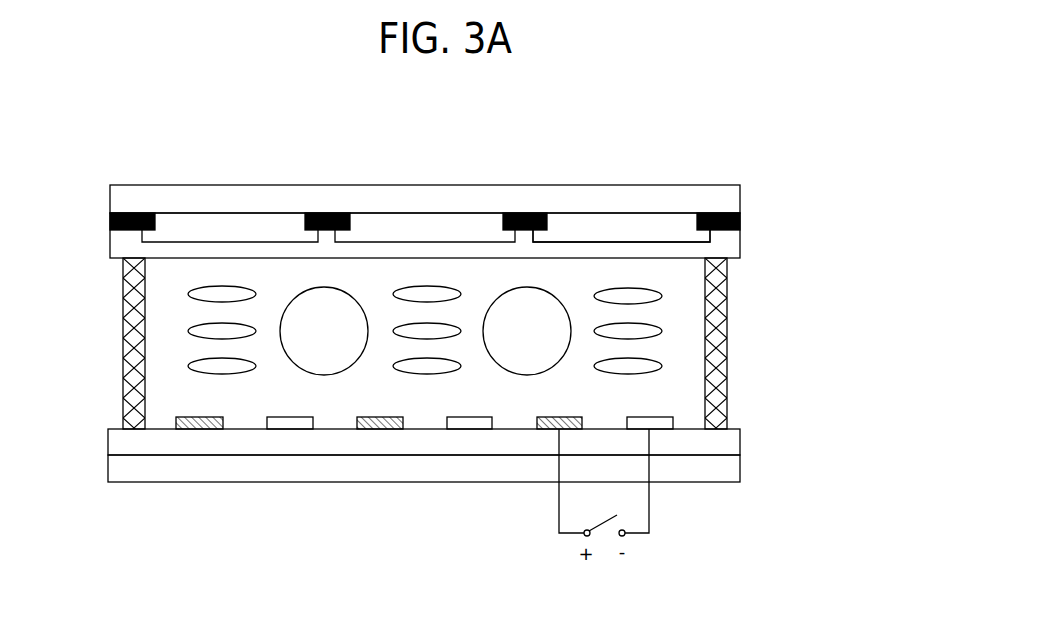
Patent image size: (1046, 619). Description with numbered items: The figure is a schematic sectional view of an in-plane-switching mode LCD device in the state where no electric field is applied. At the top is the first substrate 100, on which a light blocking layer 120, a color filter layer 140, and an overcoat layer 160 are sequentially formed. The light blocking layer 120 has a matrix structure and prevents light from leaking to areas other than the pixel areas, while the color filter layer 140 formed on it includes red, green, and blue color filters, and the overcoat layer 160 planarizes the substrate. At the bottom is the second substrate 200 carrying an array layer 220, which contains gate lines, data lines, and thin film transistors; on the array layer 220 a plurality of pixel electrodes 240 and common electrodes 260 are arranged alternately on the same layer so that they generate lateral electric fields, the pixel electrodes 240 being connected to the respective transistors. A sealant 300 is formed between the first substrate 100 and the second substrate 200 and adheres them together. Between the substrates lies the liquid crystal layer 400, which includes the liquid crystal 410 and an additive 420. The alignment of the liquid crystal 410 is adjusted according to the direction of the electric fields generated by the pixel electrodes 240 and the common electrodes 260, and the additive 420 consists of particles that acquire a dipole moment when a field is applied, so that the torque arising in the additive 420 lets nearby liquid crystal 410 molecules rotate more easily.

The first substrate 100 is at (740, 200).
The light blocking layer 120 is at (525, 213).
The color filter layer 140 is at (650, 225).
The overcoat layer 160 is at (740, 240).
The second substrate 200 is at (740, 465).
The array layer 220 is at (740, 437).
The pixel electrode 240 is at (197, 430).
The common electrode 260 is at (290, 425).
The sealant 300 is at (123, 315).
The liquid crystal layer 400 is at (525, 340).
The liquid crystal 410 is at (662, 331).
The additive 420 is at (545, 370).